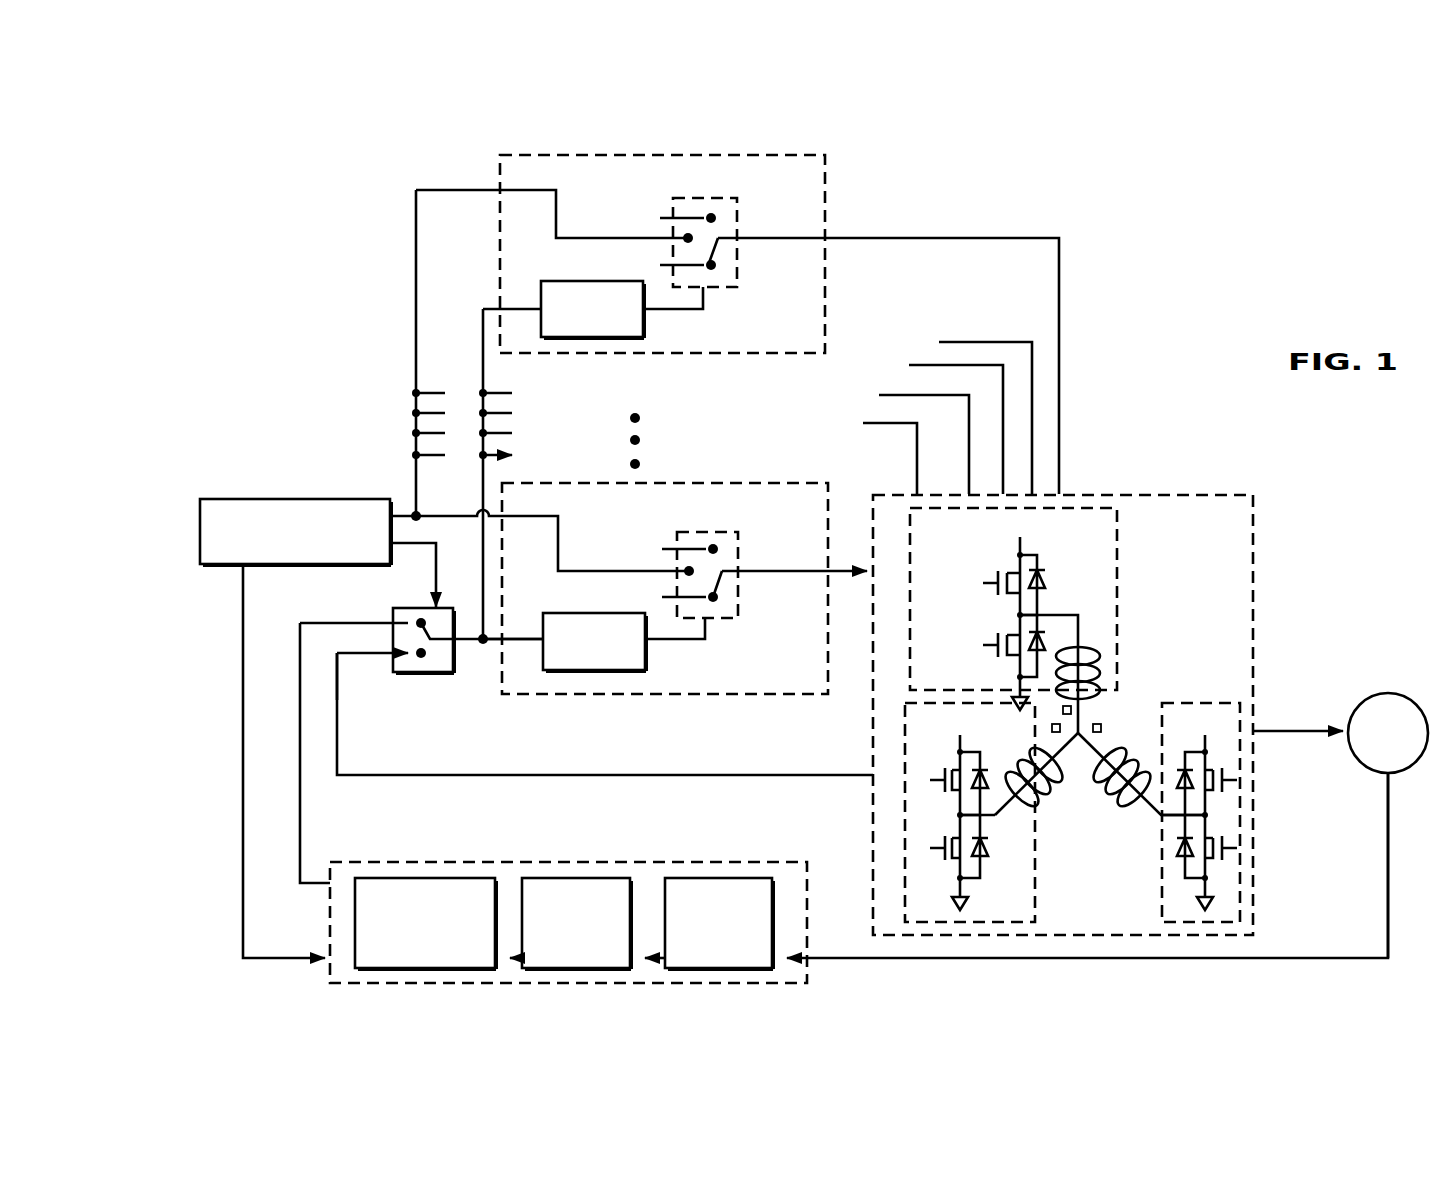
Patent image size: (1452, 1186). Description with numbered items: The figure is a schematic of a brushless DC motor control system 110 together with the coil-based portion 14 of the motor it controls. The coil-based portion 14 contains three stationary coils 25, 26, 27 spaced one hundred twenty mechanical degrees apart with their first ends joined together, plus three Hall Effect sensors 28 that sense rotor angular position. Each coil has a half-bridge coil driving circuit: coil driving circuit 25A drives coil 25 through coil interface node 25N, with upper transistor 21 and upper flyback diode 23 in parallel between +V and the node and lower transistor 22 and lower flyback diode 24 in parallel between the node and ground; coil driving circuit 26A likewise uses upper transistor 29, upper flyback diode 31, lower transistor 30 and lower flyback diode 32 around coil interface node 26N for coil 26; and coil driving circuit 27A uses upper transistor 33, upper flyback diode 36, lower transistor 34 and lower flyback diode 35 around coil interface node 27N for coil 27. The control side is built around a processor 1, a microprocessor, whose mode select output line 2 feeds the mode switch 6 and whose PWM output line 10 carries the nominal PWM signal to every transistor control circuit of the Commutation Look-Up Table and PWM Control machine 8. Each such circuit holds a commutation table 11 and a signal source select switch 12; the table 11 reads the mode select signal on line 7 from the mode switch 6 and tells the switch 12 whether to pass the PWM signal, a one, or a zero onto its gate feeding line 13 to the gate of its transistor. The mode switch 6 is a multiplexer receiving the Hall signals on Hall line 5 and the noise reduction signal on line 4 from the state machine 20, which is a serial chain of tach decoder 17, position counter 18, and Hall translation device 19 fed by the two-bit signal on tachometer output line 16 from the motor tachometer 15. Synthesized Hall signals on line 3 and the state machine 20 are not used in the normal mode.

The processor 1 is at (265, 499).
The mode select output line 2 is at (437, 578).
The synthesized Hall signal line 3 is at (477, 632).
The line 4 is at (303, 843).
The Hall line 5 is at (335, 692).
The mode switch 6 is at (413, 673).
The mode select output line 7 is at (470, 643).
The Commutation Look-Up Table and PWM Control machine 8 is at (705, 153).
The PWM output line 10 is at (414, 348).
The commutation table 11 is at (578, 280).
The signal source select switch 12 is at (708, 197).
The gate feeding line 13 is at (822, 228).
The coil-based portion 14 is at (1187, 495).
The motor tachometer 15 is at (1388, 693).
The tachometer output line 16 is at (1388, 912).
The tach decoder 17 is at (703, 878).
The position counter 18 is at (563, 878).
The Hall translation device 19 is at (437, 878).
The state machine 20 is at (395, 860).
The upper transistor 21 is at (995, 583).
The lower transistor 22 is at (995, 647).
The upper flyback diode 23 is at (1040, 587).
The lower flyback diode 24 is at (1040, 637).
The coil 25 is at (1103, 660).
The coil driving circuit 25A is at (1120, 590).
The coil interface node 25N is at (1020, 606).
The coil 26 is at (1045, 780).
The coil driving circuit 26A is at (1037, 862).
The coil interface node 26N is at (960, 815).
The coil 27 is at (1110, 795).
The coil driving circuit 27A is at (1207, 700).
The coil interface node 27N is at (1205, 815).
The Hall Effect sensors 28 is at (1097, 727).
The upper transistor 29 is at (942, 782).
The lower transistor 30 is at (945, 847).
The upper flyback diode 31 is at (983, 765).
The lower flyback diode 32 is at (983, 850).
The upper transistor 33 is at (1237, 780).
The lower transistor 34 is at (1237, 850).
The lower flyback diode 35 is at (1187, 847).
The upper flyback diode 36 is at (1183, 770).
The brushless DC motor control system 110 is at (1124, 294).